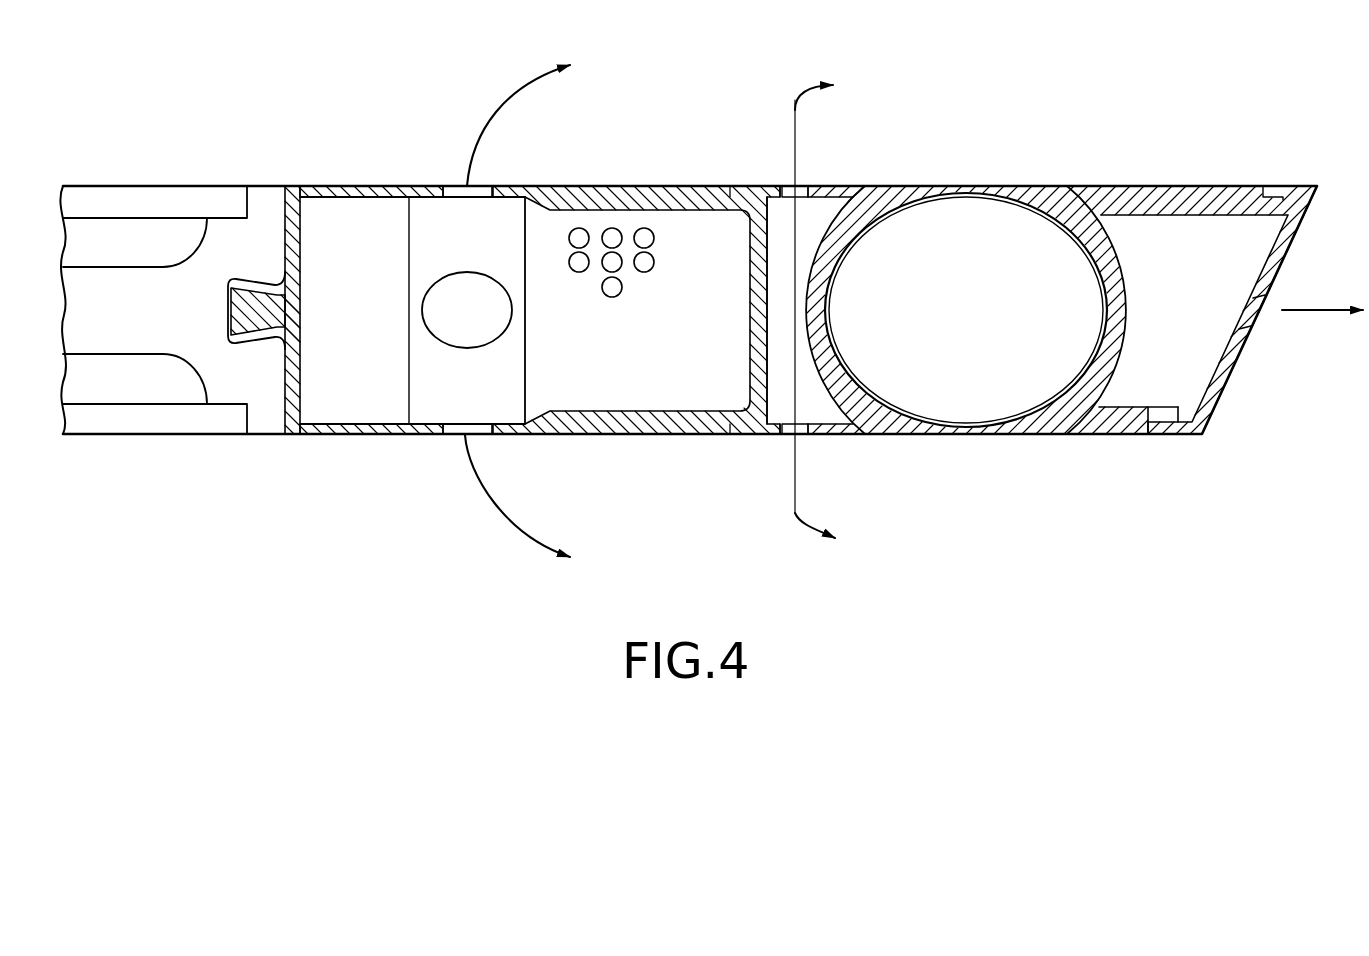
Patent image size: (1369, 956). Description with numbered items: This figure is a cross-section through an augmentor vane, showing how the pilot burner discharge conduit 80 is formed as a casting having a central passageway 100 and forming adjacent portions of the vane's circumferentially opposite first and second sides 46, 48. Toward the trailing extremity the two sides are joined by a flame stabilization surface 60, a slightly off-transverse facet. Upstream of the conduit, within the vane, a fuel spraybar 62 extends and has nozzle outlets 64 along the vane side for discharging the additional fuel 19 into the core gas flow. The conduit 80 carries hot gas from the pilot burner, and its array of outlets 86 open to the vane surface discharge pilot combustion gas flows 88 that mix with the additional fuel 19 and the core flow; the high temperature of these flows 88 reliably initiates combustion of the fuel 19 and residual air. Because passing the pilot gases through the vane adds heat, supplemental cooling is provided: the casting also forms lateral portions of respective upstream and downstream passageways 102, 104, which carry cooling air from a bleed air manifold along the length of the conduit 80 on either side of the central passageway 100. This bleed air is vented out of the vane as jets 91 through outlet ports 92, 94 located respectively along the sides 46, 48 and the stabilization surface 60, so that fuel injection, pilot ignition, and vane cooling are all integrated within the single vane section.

The additional fuel 19 is at (487, 117).
The first side 46 is at (150, 435).
The second side 48 is at (176, 186).
The flame stabilization surface 60 is at (1220, 398).
The fuel spraybar 62 is at (434, 377).
The nozzle outlets 64 is at (453, 450).
The pilot burner discharge conduit 80 is at (878, 437).
The outlets 86 is at (948, 180).
The pilot combustion gas flows 88 is at (967, 183).
The jets 91 is at (1345, 250).
The outlet port 92 is at (777, 175).
The outlet port 94 is at (1263, 325).
The central passageway 100 is at (988, 329).
The upstream passageway 102 is at (787, 358).
The downstream passageway 104 is at (1118, 387).